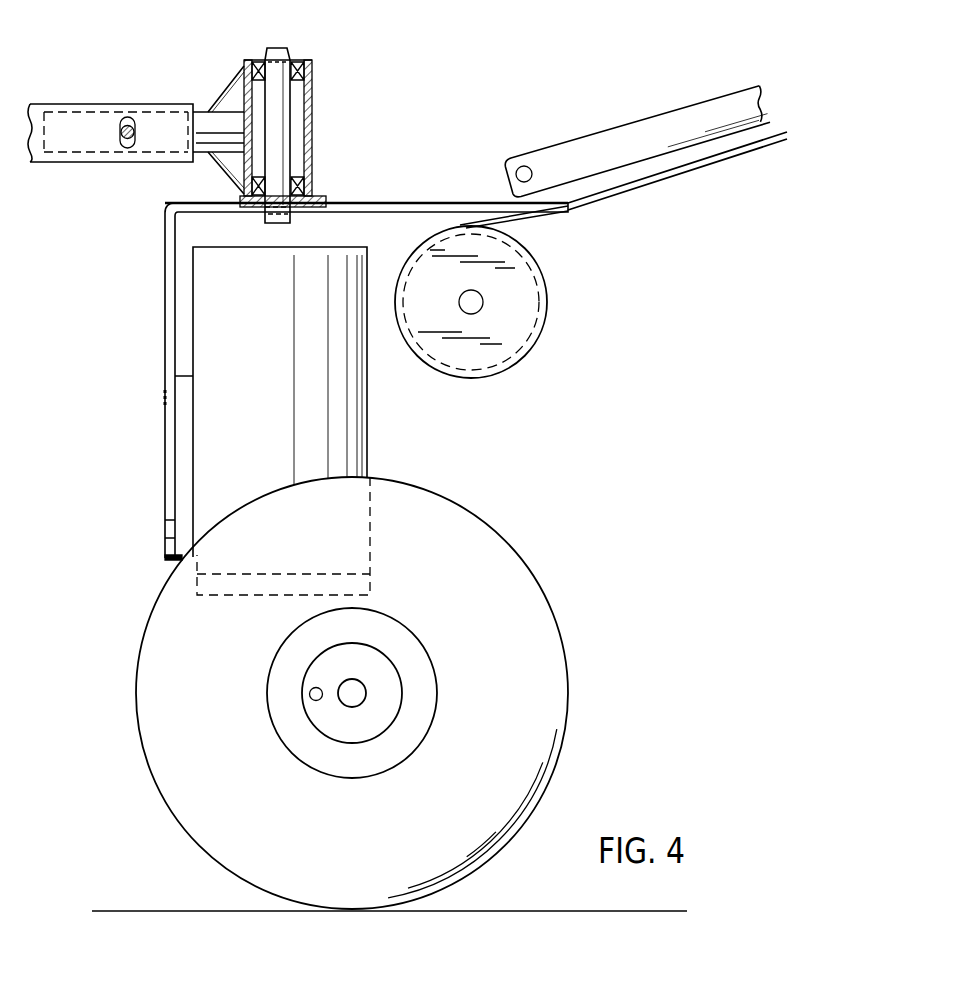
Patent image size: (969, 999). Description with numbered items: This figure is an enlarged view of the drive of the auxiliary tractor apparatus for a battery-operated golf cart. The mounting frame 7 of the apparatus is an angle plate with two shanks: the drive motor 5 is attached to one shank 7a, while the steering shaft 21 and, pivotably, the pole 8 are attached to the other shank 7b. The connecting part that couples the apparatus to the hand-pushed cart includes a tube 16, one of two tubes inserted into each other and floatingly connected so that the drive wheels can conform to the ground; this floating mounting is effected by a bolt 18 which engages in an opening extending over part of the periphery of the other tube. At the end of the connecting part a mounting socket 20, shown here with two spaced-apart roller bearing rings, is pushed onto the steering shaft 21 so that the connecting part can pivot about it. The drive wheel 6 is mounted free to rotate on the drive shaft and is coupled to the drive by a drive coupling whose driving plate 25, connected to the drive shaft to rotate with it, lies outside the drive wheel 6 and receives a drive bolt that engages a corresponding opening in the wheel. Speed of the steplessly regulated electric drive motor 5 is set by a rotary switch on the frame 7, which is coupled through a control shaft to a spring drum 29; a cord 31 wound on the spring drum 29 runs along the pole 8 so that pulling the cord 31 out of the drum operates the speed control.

The drive motor 5 is at (350, 410).
The drive wheels 6 is at (433, 507).
The apparatus frame 7 is at (157, 206).
The shank 7a is at (165, 243).
The shank 7b is at (202, 202).
The pole 8 is at (647, 132).
The tube 16 is at (73, 117).
The bolt 18 is at (127, 113).
The mounting socket 20 is at (243, 72).
The steering shaft 21 is at (287, 48).
The driving plate 25 is at (390, 680).
The spring drum 29 is at (518, 327).
The cord 31 is at (663, 170).